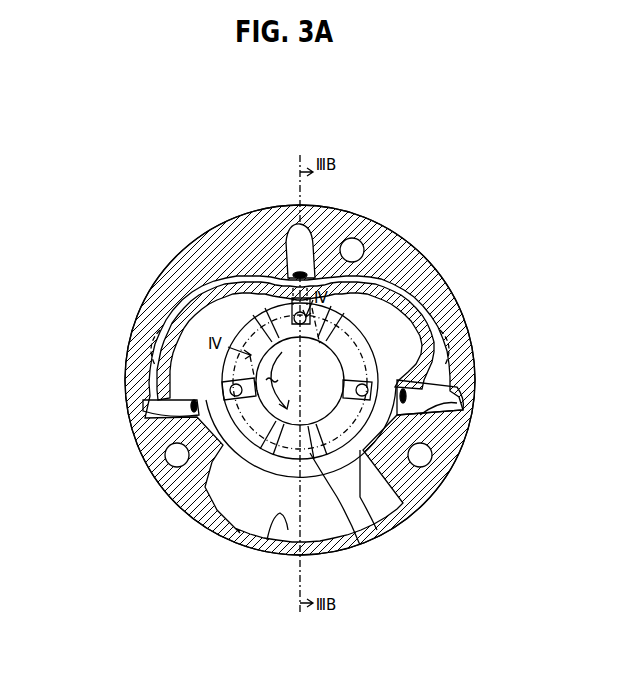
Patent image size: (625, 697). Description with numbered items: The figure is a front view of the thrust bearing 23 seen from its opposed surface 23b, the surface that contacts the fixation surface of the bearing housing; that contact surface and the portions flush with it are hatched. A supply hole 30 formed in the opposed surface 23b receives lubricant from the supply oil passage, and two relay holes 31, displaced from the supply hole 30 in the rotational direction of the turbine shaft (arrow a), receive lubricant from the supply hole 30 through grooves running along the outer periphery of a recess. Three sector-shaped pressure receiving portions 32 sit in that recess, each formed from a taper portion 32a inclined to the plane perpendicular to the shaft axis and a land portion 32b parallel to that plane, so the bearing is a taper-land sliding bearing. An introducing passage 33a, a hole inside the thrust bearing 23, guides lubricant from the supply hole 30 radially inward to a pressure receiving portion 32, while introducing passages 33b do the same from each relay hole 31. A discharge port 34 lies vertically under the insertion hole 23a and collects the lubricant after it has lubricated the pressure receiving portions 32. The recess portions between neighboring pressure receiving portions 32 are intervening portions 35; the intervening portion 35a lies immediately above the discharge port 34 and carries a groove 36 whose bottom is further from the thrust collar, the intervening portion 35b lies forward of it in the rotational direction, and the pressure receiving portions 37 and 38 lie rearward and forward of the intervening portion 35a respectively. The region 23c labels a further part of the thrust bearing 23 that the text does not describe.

The thrust bearing 23 is at (398, 215).
The insertion hole 23a is at (340, 392).
The opposed surface 23b is at (247, 232).
The housing outer wall 23c is at (163, 272).
The supply hole 30 is at (295, 229).
The relay hole 31 is at (197, 417).
The pressure receiving portion 32 is at (52, 288).
The taper portion 32a is at (245, 298).
The land portion 32b is at (170, 322).
The introducing passage 33a is at (400, 238).
The introducing passage 33b is at (450, 357).
The discharge port 34 is at (288, 530).
The intervening portion 35 is at (222, 350).
The intervening portion 35a is at (377, 530).
The intervening portion 35b is at (305, 273).
The groove 36 is at (360, 545).
The pressure receiving portion 37 is at (300, 382).
The pressure receiving portion 38 is at (564, 296).